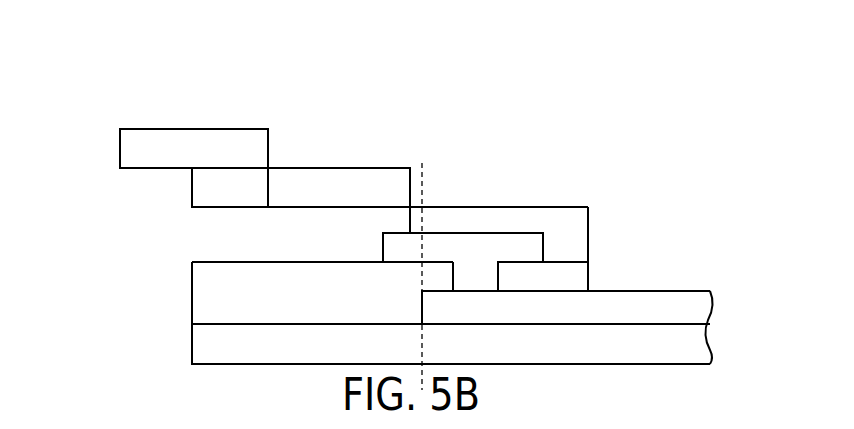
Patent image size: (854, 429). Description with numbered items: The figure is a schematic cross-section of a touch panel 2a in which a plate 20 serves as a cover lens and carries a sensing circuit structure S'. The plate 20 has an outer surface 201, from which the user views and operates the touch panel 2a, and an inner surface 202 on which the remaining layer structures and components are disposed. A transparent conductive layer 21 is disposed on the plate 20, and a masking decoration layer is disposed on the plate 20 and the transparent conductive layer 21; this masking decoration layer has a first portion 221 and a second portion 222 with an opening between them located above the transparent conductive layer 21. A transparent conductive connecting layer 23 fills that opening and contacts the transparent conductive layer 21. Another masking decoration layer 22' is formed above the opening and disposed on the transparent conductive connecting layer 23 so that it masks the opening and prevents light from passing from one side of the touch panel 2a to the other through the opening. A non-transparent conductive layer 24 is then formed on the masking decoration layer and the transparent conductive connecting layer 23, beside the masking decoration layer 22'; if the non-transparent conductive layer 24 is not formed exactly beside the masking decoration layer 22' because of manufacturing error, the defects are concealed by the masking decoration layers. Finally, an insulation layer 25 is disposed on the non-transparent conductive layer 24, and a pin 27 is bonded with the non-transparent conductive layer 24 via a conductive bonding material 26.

The touch panel 2a is at (166, 92).
The pin 27 is at (137, 151).
The conductive bonding material 26 is at (207, 194).
The insulation layer 25 is at (327, 183).
The non-transparent conductive layer 24 is at (207, 240).
The transparent conductive connecting layer 23 is at (463, 245).
The masking decoration layer 22' is at (604, 230).
The second portion 222 is at (580, 277).
The first portion 221 is at (207, 283).
The transparent conductive layer 21 is at (637, 296).
The inner surface 202 is at (207, 323).
The outer surface 201 is at (207, 363).
The plate 20 is at (630, 364).
The sensing circuit structure S' is at (754, 245).